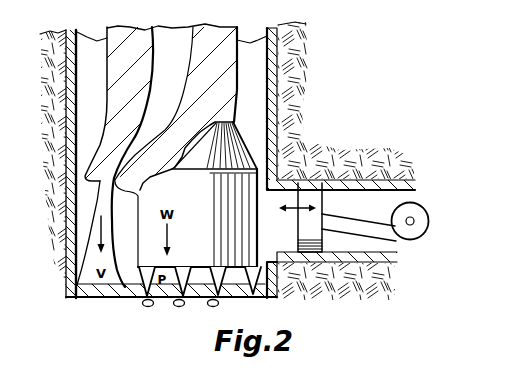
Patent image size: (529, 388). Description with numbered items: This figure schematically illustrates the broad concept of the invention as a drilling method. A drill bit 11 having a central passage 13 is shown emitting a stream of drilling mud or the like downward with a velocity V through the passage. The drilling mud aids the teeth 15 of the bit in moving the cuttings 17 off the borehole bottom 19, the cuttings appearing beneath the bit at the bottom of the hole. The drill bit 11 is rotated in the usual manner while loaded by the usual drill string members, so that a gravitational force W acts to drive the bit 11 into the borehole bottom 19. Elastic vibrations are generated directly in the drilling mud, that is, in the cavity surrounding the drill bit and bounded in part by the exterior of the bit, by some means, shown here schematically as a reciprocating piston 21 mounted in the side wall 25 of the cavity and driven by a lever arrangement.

The drill bit 11 is at (247, 147).
The central passage 13 is at (183, 59).
The teeth 15 is at (255, 280).
The cuttings 17 is at (210, 306).
The borehole bottom 19 is at (109, 298).
The reciprocating piston 21 is at (315, 233).
The side wall 25 is at (68, 152).